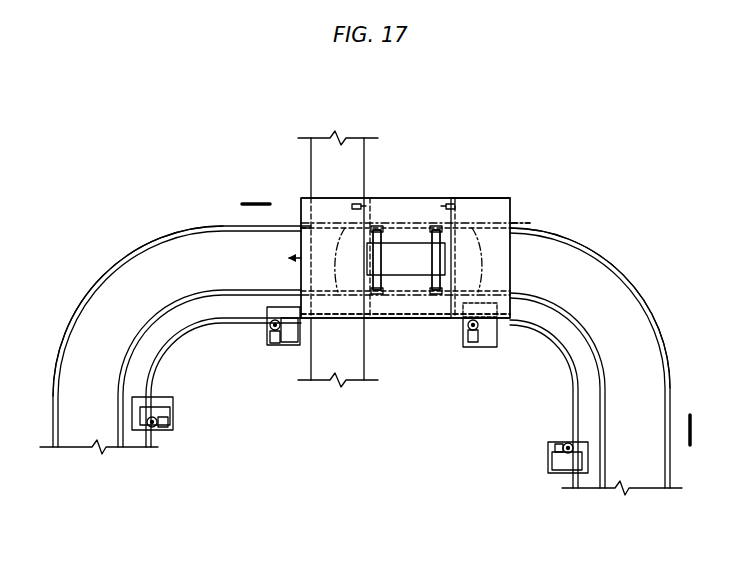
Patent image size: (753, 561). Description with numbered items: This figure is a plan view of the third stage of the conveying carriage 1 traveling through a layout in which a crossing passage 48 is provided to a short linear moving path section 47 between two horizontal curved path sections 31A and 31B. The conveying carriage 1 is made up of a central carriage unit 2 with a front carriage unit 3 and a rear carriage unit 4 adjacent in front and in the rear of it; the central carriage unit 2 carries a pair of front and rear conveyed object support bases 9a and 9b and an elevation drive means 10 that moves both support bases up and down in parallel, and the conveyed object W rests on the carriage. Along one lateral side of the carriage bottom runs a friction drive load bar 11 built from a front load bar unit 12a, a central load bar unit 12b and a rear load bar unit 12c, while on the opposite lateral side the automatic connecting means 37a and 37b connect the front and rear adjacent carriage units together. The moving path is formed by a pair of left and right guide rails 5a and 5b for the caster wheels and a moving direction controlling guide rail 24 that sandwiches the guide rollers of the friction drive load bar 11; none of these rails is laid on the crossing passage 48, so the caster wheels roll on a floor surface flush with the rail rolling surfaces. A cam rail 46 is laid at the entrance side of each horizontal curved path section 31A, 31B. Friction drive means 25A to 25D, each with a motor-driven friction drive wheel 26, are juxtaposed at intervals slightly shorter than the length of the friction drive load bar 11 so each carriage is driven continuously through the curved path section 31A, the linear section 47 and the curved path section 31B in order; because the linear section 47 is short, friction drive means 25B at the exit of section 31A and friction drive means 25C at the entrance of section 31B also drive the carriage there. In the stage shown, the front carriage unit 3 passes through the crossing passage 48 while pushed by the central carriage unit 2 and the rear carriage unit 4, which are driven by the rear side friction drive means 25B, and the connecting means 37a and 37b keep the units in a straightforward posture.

The conveying carriage 1 is at (513, 197).
The central carriage unit 2 is at (427, 205).
The front carriage unit 3 is at (301, 244).
The rear carriage unit 4 is at (505, 264).
The guide rail 5a is at (287, 290).
The guide rail 5b is at (223, 225).
The conveyed object support base 9a is at (376, 268).
The conveyed object support base 9b is at (441, 258).
The elevation drive means 10 is at (400, 250).
The friction drive load bar 11 is at (433, 321).
The front load bar unit 12a is at (348, 320).
The central load bar unit 12b is at (413, 320).
The rear load bar unit 12c is at (492, 298).
The moving direction controlling guide rail 24 is at (188, 327).
The friction drive means 25A is at (546, 456).
The friction drive means 25B is at (480, 349).
The friction drive means 25C is at (284, 349).
The friction drive means 25D is at (176, 418).
The friction drive wheel 26 is at (271, 328).
The horizontal curved path section 31A is at (634, 269).
The horizontal curved path section 31B is at (91, 264).
The automatic connecting means 37a is at (353, 202).
The automatic connecting means 37b is at (459, 207).
The cam rail 46 is at (253, 203).
The linear moving path section 47 is at (292, 219).
The crossing passage 48 is at (351, 153).
The workpiece W is at (532, 212).